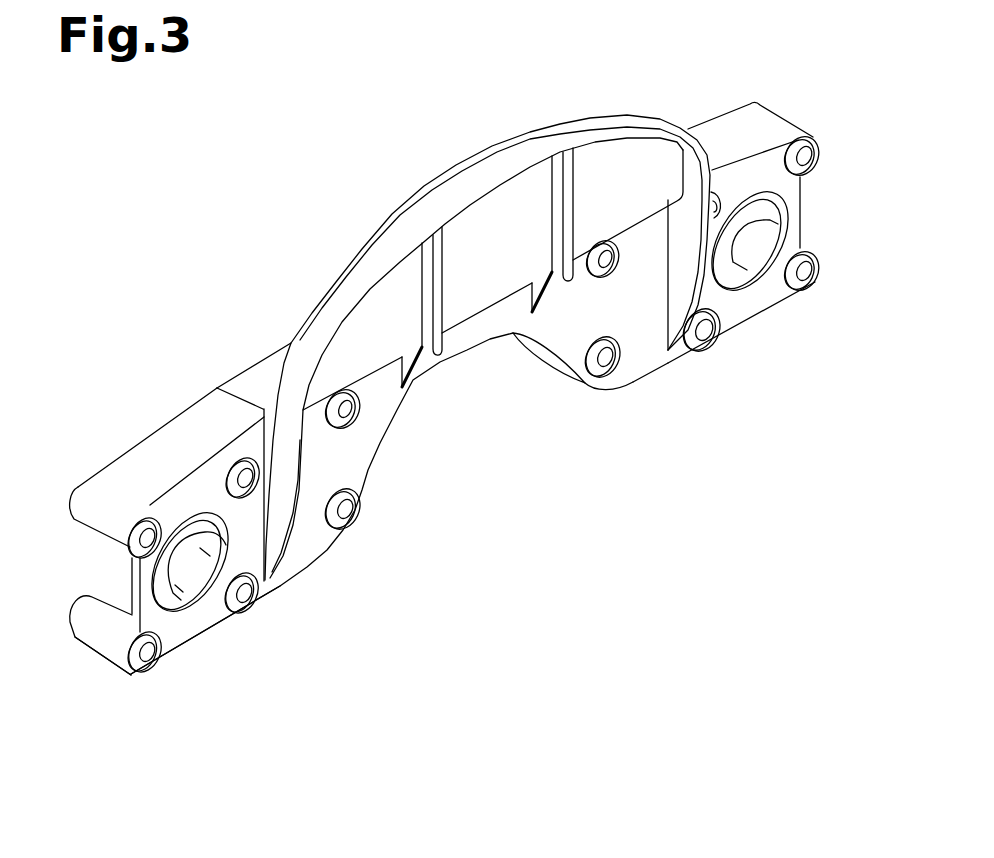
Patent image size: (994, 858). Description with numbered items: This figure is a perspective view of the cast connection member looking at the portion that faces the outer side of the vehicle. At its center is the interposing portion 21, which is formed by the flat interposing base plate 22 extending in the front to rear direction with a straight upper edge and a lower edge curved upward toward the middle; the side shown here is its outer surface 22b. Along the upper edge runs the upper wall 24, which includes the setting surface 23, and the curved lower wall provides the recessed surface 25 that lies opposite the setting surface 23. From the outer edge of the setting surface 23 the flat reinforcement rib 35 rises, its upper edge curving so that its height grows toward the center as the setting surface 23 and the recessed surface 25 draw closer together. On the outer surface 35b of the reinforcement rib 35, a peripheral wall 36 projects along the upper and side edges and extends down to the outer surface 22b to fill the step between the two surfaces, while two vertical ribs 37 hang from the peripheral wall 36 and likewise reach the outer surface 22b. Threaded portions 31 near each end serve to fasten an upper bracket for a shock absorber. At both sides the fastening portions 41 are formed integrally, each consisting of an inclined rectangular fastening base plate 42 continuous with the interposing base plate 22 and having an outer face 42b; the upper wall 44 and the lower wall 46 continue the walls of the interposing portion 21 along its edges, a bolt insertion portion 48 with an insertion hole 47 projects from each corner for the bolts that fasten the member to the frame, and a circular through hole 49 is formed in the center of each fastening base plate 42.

The interposing portion 21 is at (526, 484).
The interposing base plate 22 is at (644, 387).
The outer surface 22b is at (611, 390).
The setting surface 23 is at (274, 357).
The upper wall 24 is at (236, 382).
The recessed surface 25 is at (541, 347).
The threaded portion 31 is at (360, 415).
The reinforcement rib 35 is at (377, 238).
The outer surface 35b is at (508, 188).
The peripheral wall 36 is at (446, 195).
The vertical rib 37 is at (433, 279).
The fastening portion 41 is at (269, 683).
The fastening base plate 42 is at (215, 620).
The outer surface of fastening base plate 42b is at (170, 640).
The upper wall 44 is at (127, 467).
The lower wall 46 is at (130, 612).
The insertion hole 47 is at (240, 458).
The bolt insertion portion 48 is at (70, 514).
The circular through hole 49 is at (203, 607).